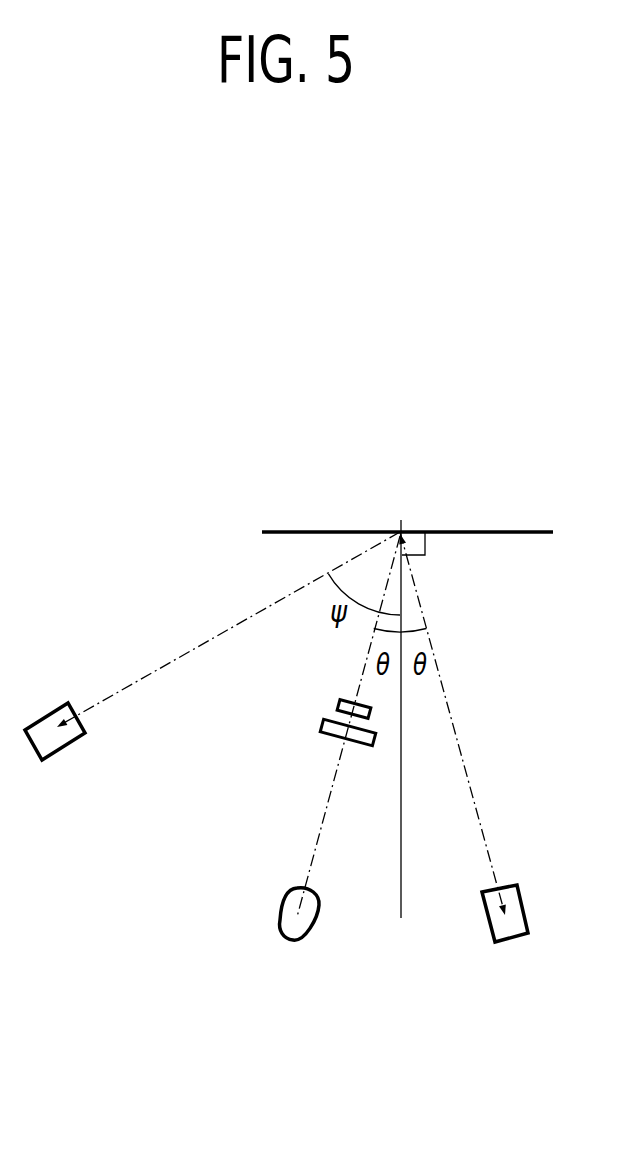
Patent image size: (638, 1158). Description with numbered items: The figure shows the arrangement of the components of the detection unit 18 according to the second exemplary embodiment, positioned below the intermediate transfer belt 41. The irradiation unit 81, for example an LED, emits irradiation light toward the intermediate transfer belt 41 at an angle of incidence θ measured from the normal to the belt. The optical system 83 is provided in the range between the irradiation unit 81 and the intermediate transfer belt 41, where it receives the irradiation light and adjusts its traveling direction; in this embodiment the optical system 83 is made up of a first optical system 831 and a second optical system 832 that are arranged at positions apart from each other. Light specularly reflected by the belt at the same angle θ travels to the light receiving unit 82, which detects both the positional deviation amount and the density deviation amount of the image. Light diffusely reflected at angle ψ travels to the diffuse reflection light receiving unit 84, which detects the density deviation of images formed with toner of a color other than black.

The detection unit 18 is at (102, 646).
The intermediate transfer belt 41 is at (510, 535).
The irradiation unit 81 is at (283, 897).
The light receiving unit 82 is at (520, 883).
The optical system 83 is at (260, 670).
The first optical system 831 is at (323, 730).
The second optical system 832 is at (338, 704).
The diffuse reflection light receiving unit 84 is at (74, 744).